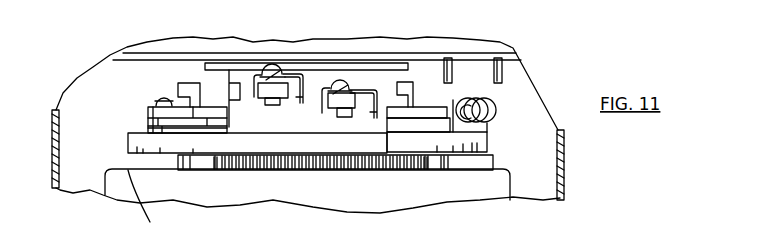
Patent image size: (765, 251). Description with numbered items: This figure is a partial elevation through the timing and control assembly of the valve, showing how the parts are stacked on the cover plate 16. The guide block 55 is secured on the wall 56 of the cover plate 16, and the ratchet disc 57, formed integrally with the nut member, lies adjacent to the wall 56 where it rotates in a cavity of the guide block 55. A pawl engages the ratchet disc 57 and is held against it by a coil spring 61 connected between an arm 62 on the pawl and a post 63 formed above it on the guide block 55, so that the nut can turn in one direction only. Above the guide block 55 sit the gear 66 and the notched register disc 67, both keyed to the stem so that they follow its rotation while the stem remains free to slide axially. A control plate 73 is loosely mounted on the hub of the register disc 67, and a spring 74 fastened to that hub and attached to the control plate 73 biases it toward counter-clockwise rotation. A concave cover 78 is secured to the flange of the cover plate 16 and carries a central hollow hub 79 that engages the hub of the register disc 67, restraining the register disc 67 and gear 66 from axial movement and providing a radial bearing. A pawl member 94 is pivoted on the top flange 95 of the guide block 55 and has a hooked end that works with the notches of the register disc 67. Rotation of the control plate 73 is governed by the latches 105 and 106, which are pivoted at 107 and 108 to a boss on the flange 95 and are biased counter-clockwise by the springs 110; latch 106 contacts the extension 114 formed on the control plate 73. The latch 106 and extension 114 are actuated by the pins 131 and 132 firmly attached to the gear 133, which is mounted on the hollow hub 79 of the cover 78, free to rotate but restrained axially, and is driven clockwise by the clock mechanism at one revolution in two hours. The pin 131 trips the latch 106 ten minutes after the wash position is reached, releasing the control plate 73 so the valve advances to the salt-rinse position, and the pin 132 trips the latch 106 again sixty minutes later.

The cover plate 16 is at (503, 188).
The guide block 55 is at (217, 165).
The wall 56 is at (142, 204).
The ratchet disc 57 is at (347, 167).
The coil spring 61 is at (497, 115).
The arm 62 is at (494, 102).
The post 63 is at (453, 101).
The gear 66 is at (397, 136).
The notched register disc 67 is at (150, 122).
The control plate 73 is at (398, 112).
The spring 74 is at (227, 82).
The concave cover 78 is at (563, 168).
The hollow hub 79 is at (353, 43).
The pawl member 94 is at (148, 113).
The top flange 95 is at (487, 142).
The latch 105 is at (345, 118).
The latch 106 is at (272, 105).
The pivot 107 is at (274, 63).
The pivot 108 is at (339, 79).
The springs 110 is at (254, 99).
The extension 114 is at (178, 84).
The pin 131 is at (499, 55).
The pin 132 is at (450, 55).
The gear 133 is at (410, 57).